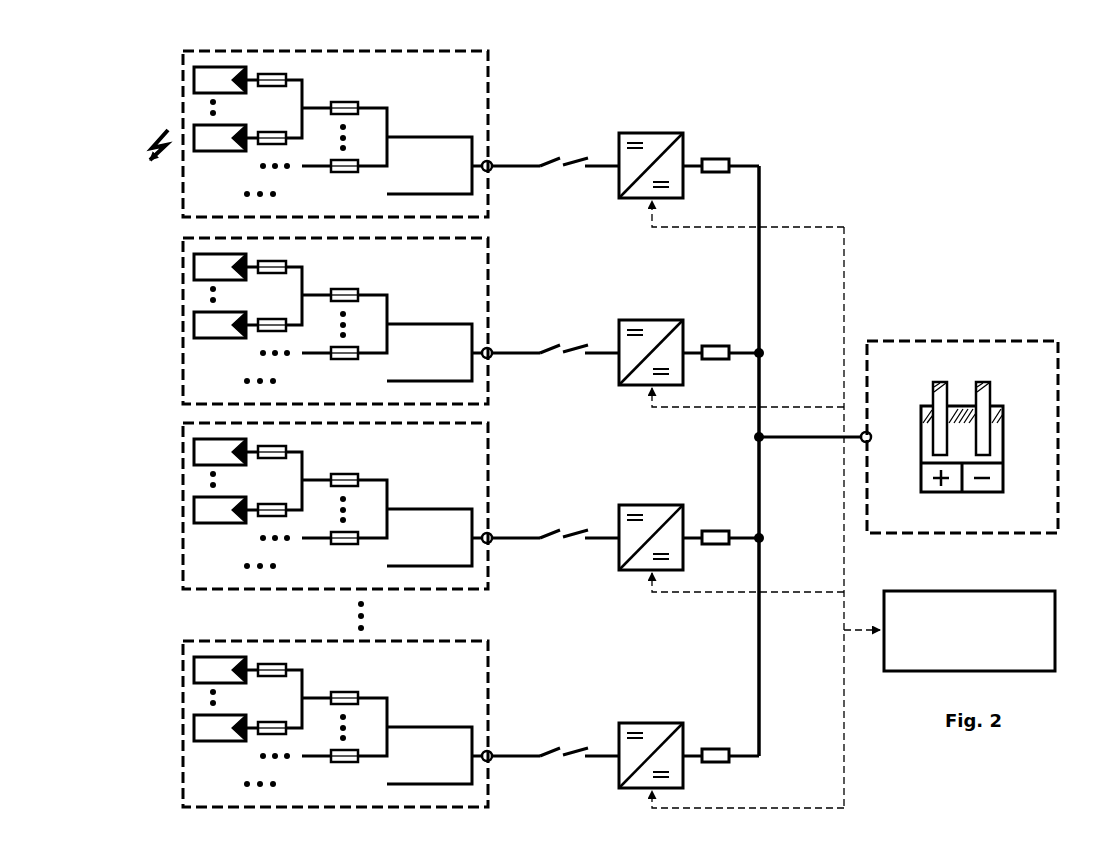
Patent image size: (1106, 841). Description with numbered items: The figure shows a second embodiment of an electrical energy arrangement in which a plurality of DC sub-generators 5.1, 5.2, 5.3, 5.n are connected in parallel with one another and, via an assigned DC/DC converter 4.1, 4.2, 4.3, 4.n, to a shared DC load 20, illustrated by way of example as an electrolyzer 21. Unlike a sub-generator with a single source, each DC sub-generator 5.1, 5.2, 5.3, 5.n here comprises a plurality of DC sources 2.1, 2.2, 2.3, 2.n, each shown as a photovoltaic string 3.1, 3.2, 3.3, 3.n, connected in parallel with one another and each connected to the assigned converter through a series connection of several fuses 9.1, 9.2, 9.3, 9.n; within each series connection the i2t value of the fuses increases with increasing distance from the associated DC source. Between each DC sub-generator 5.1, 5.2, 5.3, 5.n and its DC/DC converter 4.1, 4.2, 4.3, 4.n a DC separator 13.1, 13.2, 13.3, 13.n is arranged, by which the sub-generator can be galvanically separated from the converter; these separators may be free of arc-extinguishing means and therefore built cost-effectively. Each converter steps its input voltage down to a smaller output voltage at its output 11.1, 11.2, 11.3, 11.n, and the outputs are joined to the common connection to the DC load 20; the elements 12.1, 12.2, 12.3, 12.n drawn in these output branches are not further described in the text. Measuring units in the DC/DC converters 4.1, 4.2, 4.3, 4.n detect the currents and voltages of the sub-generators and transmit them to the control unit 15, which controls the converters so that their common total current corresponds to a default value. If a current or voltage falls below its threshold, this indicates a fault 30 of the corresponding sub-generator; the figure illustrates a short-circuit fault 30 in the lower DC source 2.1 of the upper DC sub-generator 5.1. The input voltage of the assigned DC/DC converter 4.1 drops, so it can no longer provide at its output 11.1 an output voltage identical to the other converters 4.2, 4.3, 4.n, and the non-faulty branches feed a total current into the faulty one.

The DC source 2.1 is at (181, 98).
The photovoltaic string 3.1 is at (181, 109).
The DC source 2.2 is at (181, 296).
The photovoltaic string 3.2 is at (181, 296).
The DC source 2.3 is at (180, 481).
The photovoltaic string 3.3 is at (180, 481).
The DC source 2.n is at (183, 699).
The photovoltaic string 3.n is at (182, 699).
The fuse 9.1 is at (347, 162).
The fuse 9.2 is at (336, 302).
The fuse 9.3 is at (340, 491).
The fuse 9.n is at (343, 705).
The DC sub-generator 5.1 is at (490, 86).
The DC sub-generator 5.2 is at (362, 321).
The DC sub-generator 5.3 is at (360, 506).
The DC sub-generator 5.n is at (359, 724).
The DC separator 13.1 is at (576, 141).
The DC separator 13.2 is at (579, 319).
The DC separator 13.3 is at (579, 506).
The DC separator 13.n is at (579, 723).
The DC/DC converter 4.1 is at (653, 133).
The DC/DC converter 4.2 is at (651, 328).
The DC/DC converter 4.3 is at (651, 513).
The DC/DC converter 4.n is at (654, 730).
The output 11.1 is at (685, 162).
The output 11.2 is at (715, 319).
The output 11.3 is at (715, 504).
The output 11.n is at (715, 714).
The output fuse 12.1 is at (718, 157).
The output fuse 12.2 is at (758, 321).
The output fuse 12.3 is at (759, 507).
The output fuse 12.n is at (758, 726).
The control unit 15 is at (949, 631).
The DC load 20 is at (965, 340).
The electrolyzer 21 is at (1003, 455).
The fault 30 is at (145, 150).